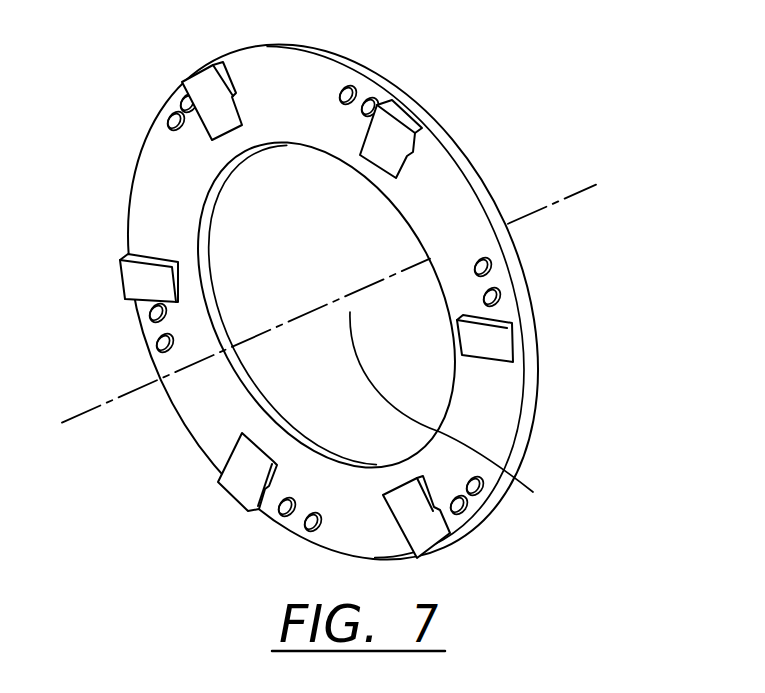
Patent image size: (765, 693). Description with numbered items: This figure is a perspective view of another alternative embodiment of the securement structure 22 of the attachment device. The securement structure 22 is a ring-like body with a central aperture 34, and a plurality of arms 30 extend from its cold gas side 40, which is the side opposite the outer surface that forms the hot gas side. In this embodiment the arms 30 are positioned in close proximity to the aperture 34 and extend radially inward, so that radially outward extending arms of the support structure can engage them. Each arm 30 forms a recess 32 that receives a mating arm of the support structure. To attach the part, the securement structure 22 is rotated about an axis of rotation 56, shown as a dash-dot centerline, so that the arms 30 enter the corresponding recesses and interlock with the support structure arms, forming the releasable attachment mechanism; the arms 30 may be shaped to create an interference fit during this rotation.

The securement structure 22 is at (463, 172).
The arms 30 is at (394, 112).
The recess 32 is at (408, 160).
The aperture 34 is at (458, 410).
The cold gas side 40 is at (155, 178).
The axis of rotation 56 is at (594, 180).